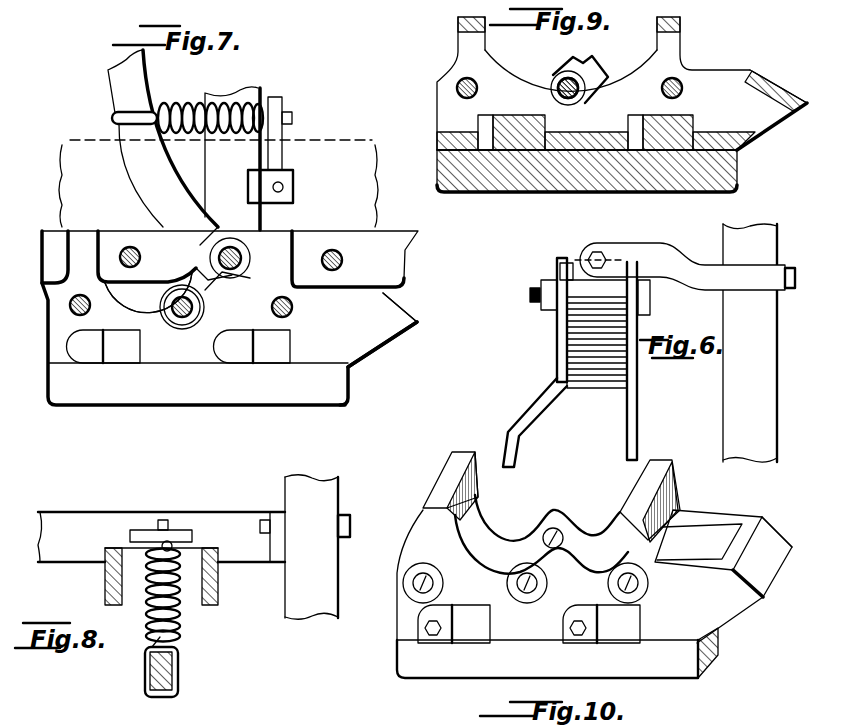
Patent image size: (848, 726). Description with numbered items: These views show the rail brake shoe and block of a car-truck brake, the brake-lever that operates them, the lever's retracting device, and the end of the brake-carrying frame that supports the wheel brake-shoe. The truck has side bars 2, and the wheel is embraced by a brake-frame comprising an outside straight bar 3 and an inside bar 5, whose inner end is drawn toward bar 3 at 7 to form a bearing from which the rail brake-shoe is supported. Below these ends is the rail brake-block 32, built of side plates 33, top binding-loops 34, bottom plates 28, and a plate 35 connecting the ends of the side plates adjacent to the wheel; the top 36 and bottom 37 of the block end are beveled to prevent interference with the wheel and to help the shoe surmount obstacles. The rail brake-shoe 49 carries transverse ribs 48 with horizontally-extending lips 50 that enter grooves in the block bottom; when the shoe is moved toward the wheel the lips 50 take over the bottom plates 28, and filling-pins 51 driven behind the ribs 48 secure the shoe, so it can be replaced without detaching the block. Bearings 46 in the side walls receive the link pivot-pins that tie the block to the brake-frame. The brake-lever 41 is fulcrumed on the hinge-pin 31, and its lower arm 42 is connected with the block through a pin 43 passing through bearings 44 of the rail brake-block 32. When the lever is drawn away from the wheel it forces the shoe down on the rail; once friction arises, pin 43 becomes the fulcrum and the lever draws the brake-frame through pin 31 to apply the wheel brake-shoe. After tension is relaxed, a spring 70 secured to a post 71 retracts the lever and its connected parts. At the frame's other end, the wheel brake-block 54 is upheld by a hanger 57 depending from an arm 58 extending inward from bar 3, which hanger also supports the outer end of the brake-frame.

In FIG. 7, the side bars 2 is at (216, 173).
In FIG. 6, the side bars 2 is at (779, 365).
In FIG. 6, the outside straight bar 3 is at (638, 408).
In FIG. 6, the inside bar 5 is at (535, 405).
In FIG. 7, the inner end of bar 5 7 is at (365, 245).
In FIG. 6, the inner end of bar 5 7 is at (557, 340).
In FIG. 9, the bottom plates 28 is at (572, 146).
In FIG. 7, the hinge-pin 31 is at (215, 248).
In FIG. 7, the rail brake-block 32 is at (150, 296).
In FIG. 9, the rail brake-block 32 is at (522, 95).
In FIG. 10, the rail brake-block 32 is at (397, 615).
In FIG. 9, the side plates 33 is at (587, 126).
In FIG. 10, the side plates 33 is at (510, 548).
In FIG. 9, the top binding-loops 34 is at (485, 45).
In FIG. 10, the top binding-loops 34 is at (445, 490).
In FIG. 9, the plate 35 is at (773, 89).
In FIG. 10, the plate 35 is at (793, 545).
In FIG. 7, the beveled top 36 is at (263, 216).
In FIG. 9, the beveled top 36 is at (787, 90).
In FIG. 10, the beveled top 36 is at (723, 553).
In FIG. 7, the beveled bottom 37 is at (380, 340).
In FIG. 9, the beveled bottom 37 is at (778, 120).
In FIG. 10, the beveled bottom 37 is at (740, 610).
In FIG. 7, the brake-lever 41 is at (135, 183).
In FIG. 8, the brake-lever 41 is at (150, 676).
In FIG. 7, the lower arm 42 is at (210, 290).
In FIG. 9, the lower arm 42 is at (590, 68).
In FIG. 7, the pin 43 is at (185, 318).
In FIG. 9, the pin 43 is at (556, 98).
In FIG. 9, the bearings 44 is at (564, 80).
In FIG. 10, the bearings 44 is at (562, 546).
In FIG. 10, the bearings 46 is at (442, 590).
In FIG. 7, the transverse ribs 48 is at (140, 333).
In FIG. 9, the transverse ribs 48 is at (660, 115).
In FIG. 10, the transverse ribs 48 is at (490, 620).
In FIG. 7, the rail brake-shoe 49 is at (232, 405).
In FIG. 9, the rail brake-shoe 49 is at (535, 193).
In FIG. 10, the rail brake-shoe 49 is at (478, 680).
In FIG. 9, the lips 50 is at (697, 130).
In FIG. 7, the filling-pins 51 is at (105, 350).
In FIG. 9, the filling-pins 51 is at (487, 128).
In FIG. 10, the filling-pins 51 is at (413, 606).
In FIG. 6, the wheel brake-block 54 is at (567, 360).
In FIG. 6, the hanger 57 is at (613, 262).
In FIG. 6, the arm 58 is at (700, 283).
In FIG. 7, the spring 70 is at (195, 105).
In FIG. 8, the spring 70 is at (180, 617).
In FIG. 7, the post 71 is at (283, 150).
In FIG. 8, the post 71 is at (193, 535).